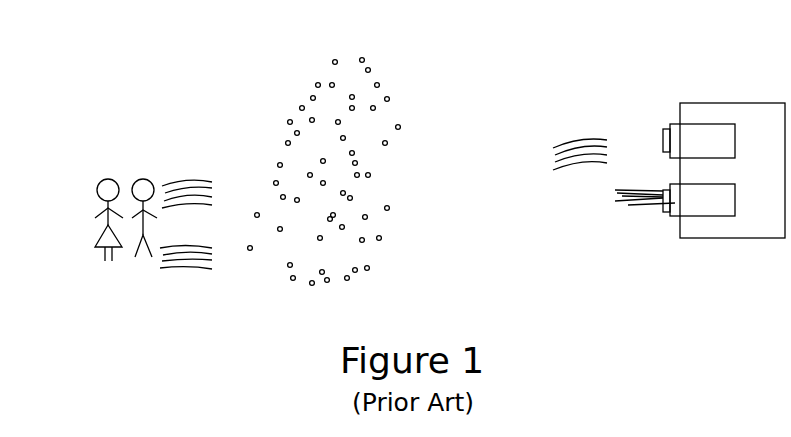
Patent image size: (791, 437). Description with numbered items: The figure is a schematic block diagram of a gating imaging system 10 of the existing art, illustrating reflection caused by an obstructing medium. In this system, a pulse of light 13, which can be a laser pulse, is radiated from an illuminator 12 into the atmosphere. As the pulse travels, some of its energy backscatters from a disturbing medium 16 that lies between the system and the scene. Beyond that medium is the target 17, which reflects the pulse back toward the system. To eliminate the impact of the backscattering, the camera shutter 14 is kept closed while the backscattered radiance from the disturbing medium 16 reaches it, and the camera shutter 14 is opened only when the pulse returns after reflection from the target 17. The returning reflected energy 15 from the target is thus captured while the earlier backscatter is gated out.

The gating imaging system 10 is at (728, 102).
The illuminator 12 is at (675, 127).
The pulse of light 13 is at (578, 137).
The camera shutter 14 is at (673, 218).
The sound waves from persons 15 is at (170, 267).
The disturbing medium 16 is at (313, 90).
The target 17 is at (98, 163).